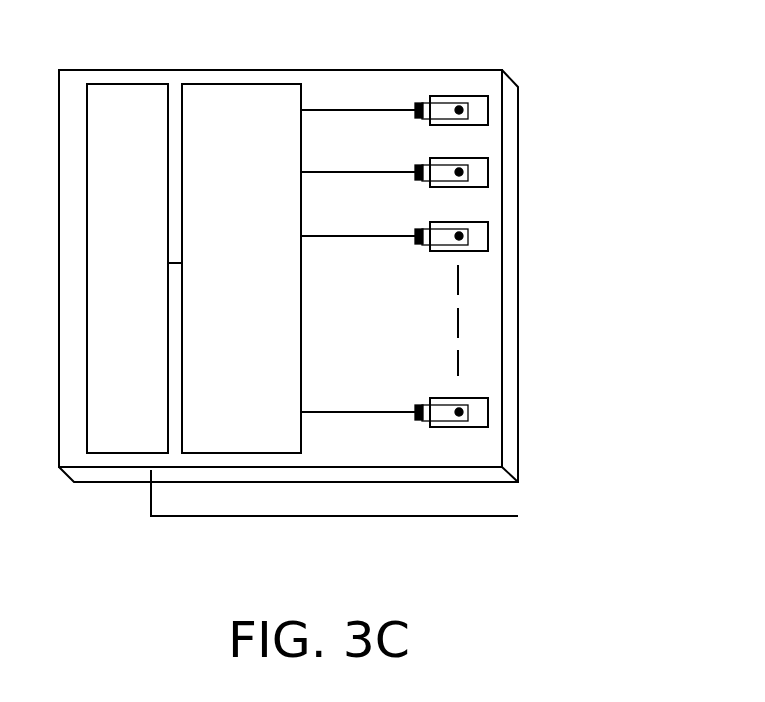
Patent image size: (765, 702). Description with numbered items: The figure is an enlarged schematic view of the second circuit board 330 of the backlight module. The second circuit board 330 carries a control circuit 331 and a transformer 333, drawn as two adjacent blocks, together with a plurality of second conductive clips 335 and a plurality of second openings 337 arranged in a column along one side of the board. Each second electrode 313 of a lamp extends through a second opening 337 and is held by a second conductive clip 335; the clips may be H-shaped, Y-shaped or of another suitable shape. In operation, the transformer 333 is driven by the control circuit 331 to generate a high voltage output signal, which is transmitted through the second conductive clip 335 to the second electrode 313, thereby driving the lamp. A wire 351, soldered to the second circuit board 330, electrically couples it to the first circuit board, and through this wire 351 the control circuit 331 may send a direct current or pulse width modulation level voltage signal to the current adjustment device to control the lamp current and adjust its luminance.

The second circuit board 330 is at (546, 505).
The control circuit 331 is at (136, 84).
The transformer 333 is at (237, 84).
The second conductive clip 335 is at (443, 100).
The second opening 337 is at (476, 96).
The second electrode 313 is at (462, 110).
The wire 351 is at (395, 517).